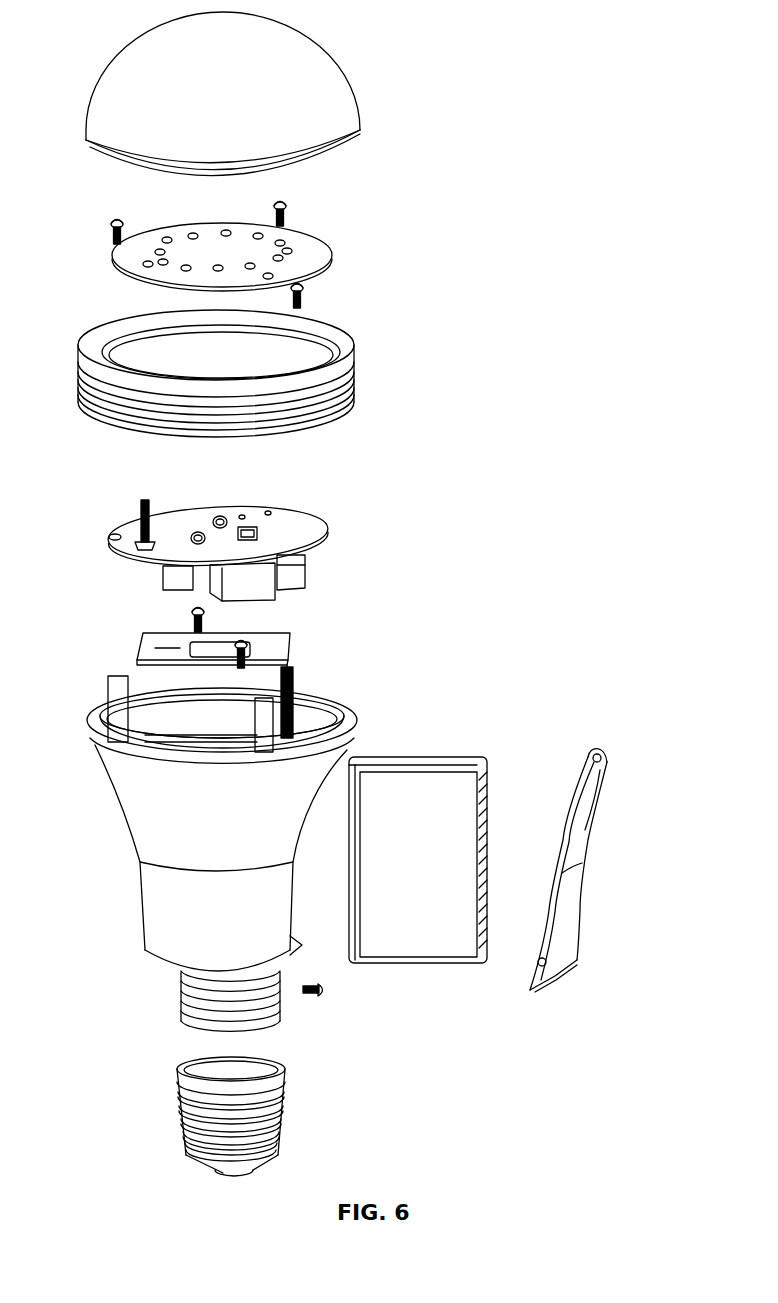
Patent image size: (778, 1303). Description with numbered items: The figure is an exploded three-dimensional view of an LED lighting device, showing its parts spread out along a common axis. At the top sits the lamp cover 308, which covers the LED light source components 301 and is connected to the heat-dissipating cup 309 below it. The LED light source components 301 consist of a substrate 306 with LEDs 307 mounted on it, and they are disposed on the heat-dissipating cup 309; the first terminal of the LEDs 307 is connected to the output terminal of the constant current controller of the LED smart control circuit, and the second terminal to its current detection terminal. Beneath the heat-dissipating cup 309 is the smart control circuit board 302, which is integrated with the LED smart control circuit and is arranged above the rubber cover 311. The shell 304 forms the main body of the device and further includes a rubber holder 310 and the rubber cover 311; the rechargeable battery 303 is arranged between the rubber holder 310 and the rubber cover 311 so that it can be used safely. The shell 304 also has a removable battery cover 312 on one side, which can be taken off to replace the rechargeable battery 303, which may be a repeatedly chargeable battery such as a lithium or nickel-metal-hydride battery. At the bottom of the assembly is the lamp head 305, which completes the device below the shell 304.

The LED light source components 301 is at (232, 248).
The smart control circuit board 302 is at (298, 540).
The rechargeable battery 303 is at (435, 858).
The shell 304 is at (173, 913).
The lamp head 305 is at (282, 1108).
The substrate 306 is at (317, 248).
The LEDs 307 is at (160, 243).
The lamp cover 308 is at (325, 112).
The heat-dissipating cup 309 is at (287, 353).
The rubber holder 310 is at (275, 648).
The rubber cover 311 is at (187, 1013).
The removable battery cover 312 is at (565, 900).